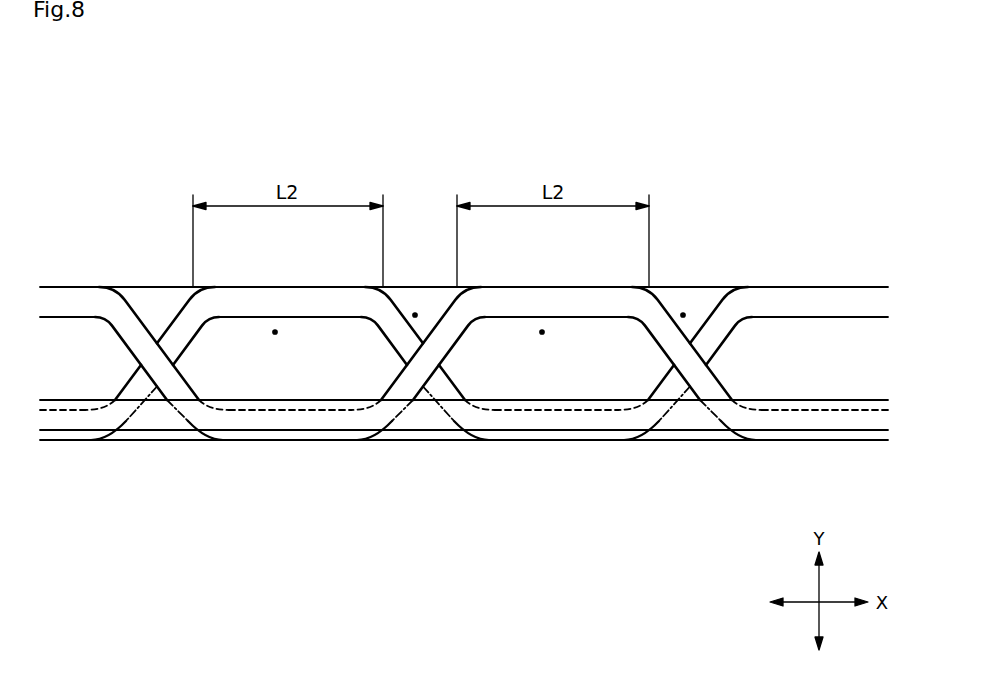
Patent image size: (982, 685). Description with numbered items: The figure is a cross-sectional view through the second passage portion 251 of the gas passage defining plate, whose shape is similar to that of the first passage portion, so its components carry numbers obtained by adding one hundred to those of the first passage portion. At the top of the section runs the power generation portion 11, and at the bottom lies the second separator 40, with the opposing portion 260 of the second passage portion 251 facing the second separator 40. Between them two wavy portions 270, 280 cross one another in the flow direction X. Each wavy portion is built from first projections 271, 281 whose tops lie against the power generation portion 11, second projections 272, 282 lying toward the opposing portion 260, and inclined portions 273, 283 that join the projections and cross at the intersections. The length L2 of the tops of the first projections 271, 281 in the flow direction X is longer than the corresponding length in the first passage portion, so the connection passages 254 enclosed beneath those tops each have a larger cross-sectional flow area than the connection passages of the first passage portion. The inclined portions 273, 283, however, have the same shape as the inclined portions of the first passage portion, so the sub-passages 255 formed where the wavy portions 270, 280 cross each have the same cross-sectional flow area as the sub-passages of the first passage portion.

The power generation portion 11 is at (696, 291).
The second separator 40 is at (686, 440).
The second passage portion 251 is at (806, 210).
The connection passage 254 is at (275, 332).
The sub-passage 255 is at (415, 315).
The opposing portion 260 is at (152, 440).
The wavy portion 270 is at (134, 298).
The first projection 271 is at (585, 297).
The second projection 272 is at (285, 440).
The inclined portion 273 is at (127, 340).
The wavy portion 280 is at (165, 299).
The first projection 281 is at (317, 297).
The second projection 282 is at (548, 440).
The inclined portion 283 is at (182, 340).